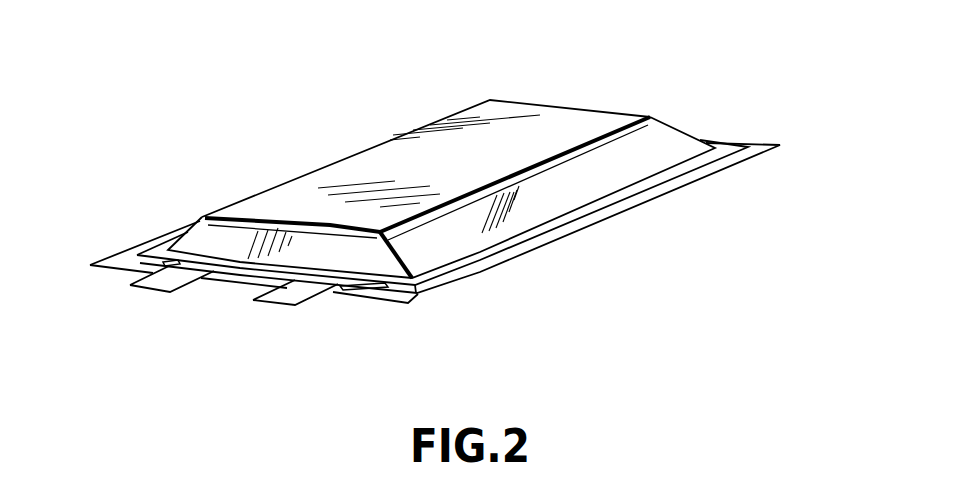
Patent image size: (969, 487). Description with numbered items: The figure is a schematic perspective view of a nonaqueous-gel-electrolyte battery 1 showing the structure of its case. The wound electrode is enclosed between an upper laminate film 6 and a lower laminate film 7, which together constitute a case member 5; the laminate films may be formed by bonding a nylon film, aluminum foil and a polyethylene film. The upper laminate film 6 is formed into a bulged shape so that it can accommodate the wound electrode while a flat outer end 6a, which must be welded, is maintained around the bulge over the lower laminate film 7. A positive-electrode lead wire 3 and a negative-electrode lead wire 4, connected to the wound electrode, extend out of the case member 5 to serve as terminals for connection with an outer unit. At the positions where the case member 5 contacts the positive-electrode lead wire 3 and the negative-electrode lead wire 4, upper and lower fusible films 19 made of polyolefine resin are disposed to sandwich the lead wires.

The nonaqueous-gel-electrolyte battery 1 is at (472, 179).
The positive-electrode lead wire 3 is at (148, 290).
The negative-electrode lead wire 4 is at (278, 302).
The case member 5 is at (472, 201).
The upper laminate film 6 is at (475, 196).
The outer end 6a is at (547, 223).
The lower laminate film 7 is at (451, 223).
The fusible film 19 is at (368, 320).